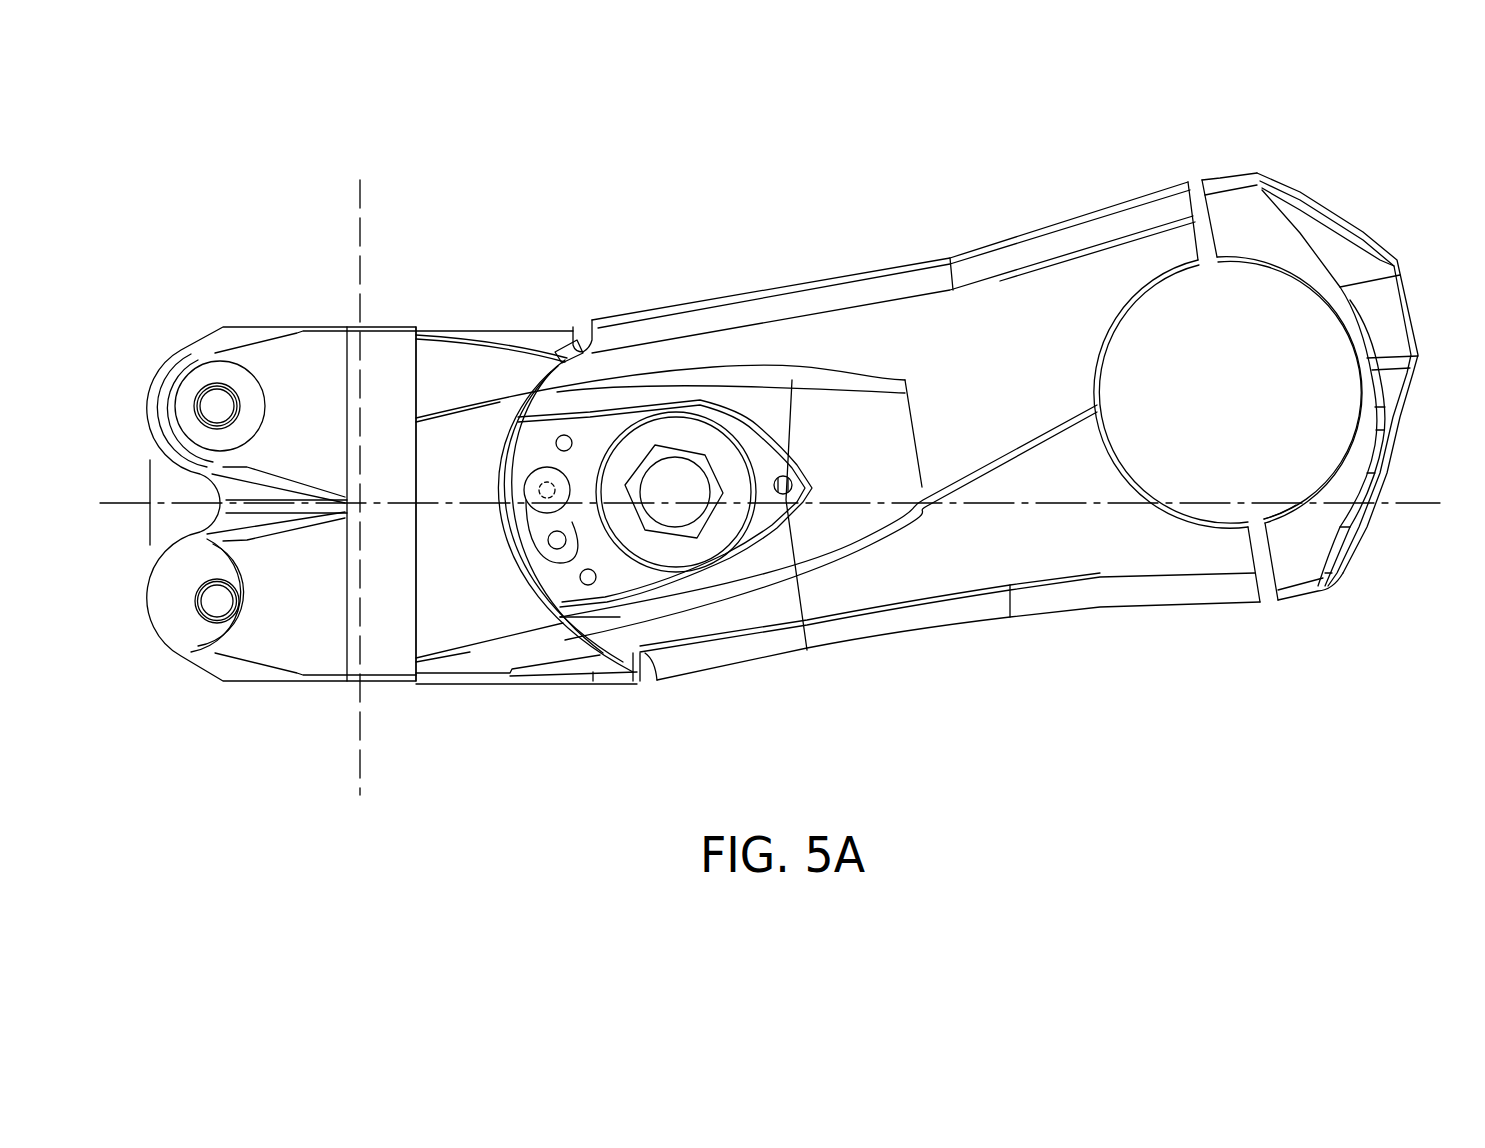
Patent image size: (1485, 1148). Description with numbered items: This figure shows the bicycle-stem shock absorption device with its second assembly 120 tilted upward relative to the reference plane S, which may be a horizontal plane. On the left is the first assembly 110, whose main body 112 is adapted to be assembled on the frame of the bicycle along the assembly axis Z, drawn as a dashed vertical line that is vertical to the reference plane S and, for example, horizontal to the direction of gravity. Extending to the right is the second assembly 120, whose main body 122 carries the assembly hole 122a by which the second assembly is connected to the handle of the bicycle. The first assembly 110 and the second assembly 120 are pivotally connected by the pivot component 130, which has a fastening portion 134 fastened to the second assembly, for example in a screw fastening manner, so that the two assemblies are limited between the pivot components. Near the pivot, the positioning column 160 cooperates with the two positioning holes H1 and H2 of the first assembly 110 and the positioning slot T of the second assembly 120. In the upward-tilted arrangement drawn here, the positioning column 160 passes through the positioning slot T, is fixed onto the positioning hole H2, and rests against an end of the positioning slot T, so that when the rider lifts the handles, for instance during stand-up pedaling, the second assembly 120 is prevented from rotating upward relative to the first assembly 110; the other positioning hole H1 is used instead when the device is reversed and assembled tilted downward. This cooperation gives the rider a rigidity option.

The first assembly 110 is at (147, 345).
The main body 112 is at (313, 372).
The second assembly 120 is at (1340, 181).
The main body 122 is at (1133, 268).
The assembly hole 122a is at (1275, 442).
The pivot component 130 is at (768, 462).
The fastening portion 134 is at (675, 437).
The positioning column 160 is at (530, 482).
The positioning hole H1 is at (563, 548).
The positioning hole H2 is at (556, 488).
The positioning slot T is at (580, 541).
The reference plane S is at (140, 503).
The assembly axis Z is at (362, 200).